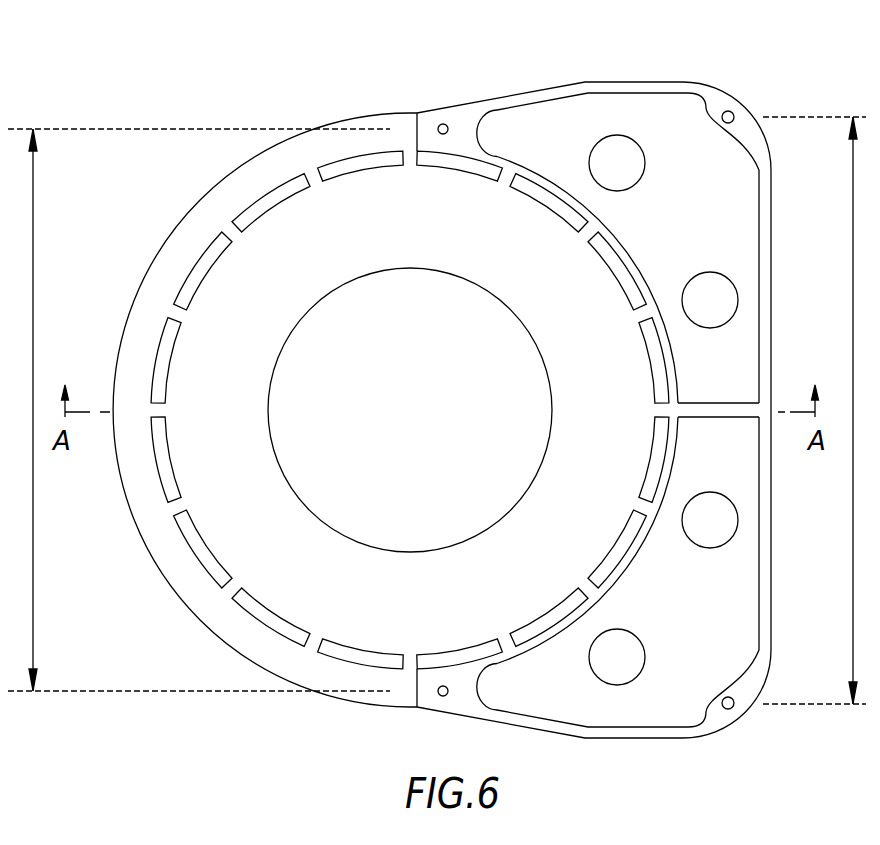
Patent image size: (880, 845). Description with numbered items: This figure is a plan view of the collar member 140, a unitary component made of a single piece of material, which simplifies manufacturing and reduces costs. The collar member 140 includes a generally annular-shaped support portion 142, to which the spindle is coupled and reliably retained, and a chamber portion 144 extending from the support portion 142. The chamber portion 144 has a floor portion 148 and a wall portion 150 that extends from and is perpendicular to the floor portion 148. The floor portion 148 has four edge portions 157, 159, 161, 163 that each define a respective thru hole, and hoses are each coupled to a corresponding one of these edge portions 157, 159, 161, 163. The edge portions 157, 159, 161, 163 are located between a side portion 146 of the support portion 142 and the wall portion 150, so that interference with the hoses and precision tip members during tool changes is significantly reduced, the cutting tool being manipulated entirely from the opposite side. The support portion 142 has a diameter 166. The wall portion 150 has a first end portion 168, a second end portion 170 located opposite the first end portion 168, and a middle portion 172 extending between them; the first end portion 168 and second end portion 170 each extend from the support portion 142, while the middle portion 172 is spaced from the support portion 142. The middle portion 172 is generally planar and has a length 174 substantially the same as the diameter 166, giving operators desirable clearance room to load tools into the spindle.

The collar member 140 is at (195, 100).
The support portion 142 is at (305, 220).
The chamber portion 144 is at (655, 717).
The side portion 146 is at (665, 348).
The floor portion 148 is at (730, 207).
The wall portion 150 is at (621, 87).
The edge portion 157 is at (644, 650).
The edge portion 159 is at (593, 150).
The edge portion 161 is at (700, 546).
The edge portion 163 is at (708, 273).
The diameter 166 is at (33, 244).
The first end portion 168 is at (583, 742).
The second end portion 170 is at (560, 98).
The middle portion 172 is at (773, 492).
The length 174 is at (849, 266).